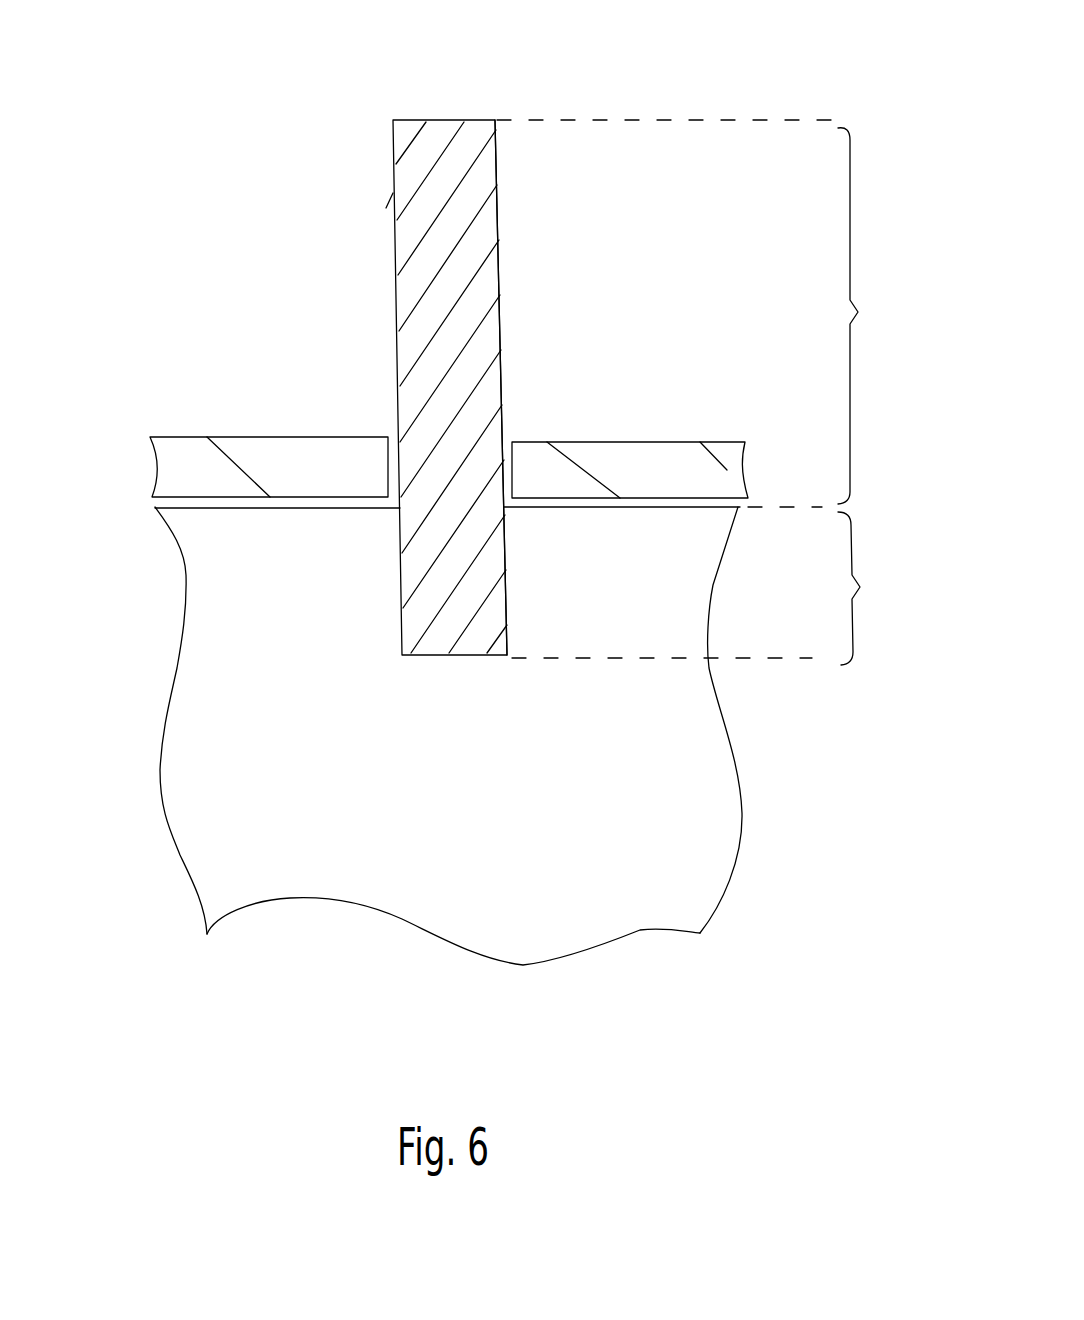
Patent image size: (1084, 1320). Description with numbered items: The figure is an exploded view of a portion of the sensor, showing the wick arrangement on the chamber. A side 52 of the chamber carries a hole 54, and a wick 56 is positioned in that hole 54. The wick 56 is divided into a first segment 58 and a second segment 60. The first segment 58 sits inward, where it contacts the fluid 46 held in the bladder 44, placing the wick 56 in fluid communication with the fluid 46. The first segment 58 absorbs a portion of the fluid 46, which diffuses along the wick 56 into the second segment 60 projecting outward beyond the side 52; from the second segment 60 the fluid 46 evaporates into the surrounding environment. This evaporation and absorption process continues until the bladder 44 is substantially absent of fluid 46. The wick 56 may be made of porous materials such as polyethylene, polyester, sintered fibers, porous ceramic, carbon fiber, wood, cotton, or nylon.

The bladder 44 is at (743, 800).
The fluid 46 is at (208, 577).
The side 52 is at (214, 392).
The hole 54 is at (525, 423).
The wick 56 is at (408, 148).
The first segment 58 is at (713, 588).
The second segment 60 is at (705, 313).